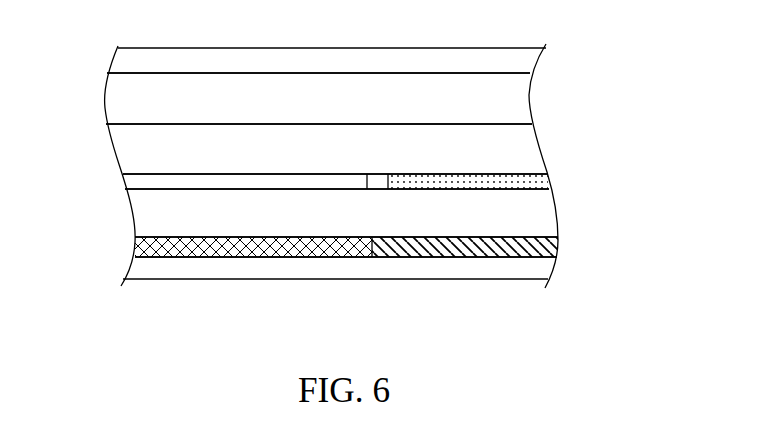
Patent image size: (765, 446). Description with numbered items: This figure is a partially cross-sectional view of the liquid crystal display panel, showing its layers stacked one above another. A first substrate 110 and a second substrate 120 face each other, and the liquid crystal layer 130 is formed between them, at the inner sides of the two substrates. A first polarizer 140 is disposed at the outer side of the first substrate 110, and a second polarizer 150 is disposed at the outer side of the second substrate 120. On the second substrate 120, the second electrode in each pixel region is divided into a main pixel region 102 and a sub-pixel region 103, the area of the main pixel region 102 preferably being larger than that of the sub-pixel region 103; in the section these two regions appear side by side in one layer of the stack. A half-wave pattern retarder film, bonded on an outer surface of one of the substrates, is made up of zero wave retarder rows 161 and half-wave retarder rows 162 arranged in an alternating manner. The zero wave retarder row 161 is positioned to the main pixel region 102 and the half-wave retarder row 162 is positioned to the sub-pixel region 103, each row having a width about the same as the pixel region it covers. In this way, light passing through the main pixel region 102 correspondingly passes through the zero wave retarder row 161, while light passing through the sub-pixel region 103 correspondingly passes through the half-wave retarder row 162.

The first polarizer 140 is at (510, 66).
The first substrate 110 is at (495, 105).
The liquid crystal layer 130 is at (513, 141).
The main pixel region 102 is at (143, 170).
The sub-pixel region 103 is at (530, 186).
The second substrate 120 is at (535, 210).
The zero wave retarder row 161 is at (147, 247).
The half wave retarder row 162 is at (545, 249).
The second polarizer 150 is at (535, 268).